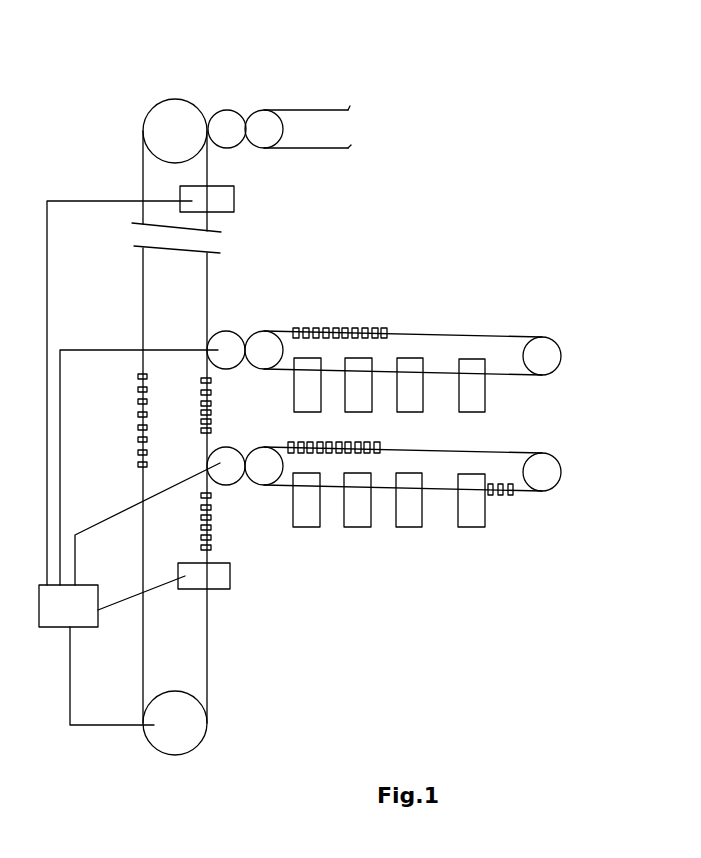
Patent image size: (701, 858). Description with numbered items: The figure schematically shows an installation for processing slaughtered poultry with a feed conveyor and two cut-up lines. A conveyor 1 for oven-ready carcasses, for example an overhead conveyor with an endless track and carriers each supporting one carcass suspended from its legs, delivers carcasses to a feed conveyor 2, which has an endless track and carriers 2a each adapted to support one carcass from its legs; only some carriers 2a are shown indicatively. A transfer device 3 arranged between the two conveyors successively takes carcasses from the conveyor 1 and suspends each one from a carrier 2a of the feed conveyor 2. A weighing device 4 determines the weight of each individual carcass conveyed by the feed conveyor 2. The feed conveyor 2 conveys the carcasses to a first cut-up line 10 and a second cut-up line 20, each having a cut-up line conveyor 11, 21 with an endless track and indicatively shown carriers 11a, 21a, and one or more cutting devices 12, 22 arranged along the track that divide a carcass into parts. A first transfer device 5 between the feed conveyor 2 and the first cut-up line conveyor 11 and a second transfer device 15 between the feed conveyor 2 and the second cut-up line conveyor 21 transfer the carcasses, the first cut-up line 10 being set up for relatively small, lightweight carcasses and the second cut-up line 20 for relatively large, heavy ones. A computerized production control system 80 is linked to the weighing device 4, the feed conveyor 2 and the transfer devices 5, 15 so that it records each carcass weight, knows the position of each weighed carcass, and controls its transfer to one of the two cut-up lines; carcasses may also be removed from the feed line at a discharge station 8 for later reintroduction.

The conveyor 1 is at (325, 92).
The feed conveyor 2 is at (128, 150).
The carriers 2a is at (137, 428).
The transfer device 3 is at (225, 97).
The weighing device 4 is at (243, 196).
The first transfer device 5 is at (228, 327).
The discharge station 8 is at (233, 580).
The first cut-up line 10 is at (510, 312).
The first cut-up line conveyor 11 is at (428, 331).
The carriers 11a is at (318, 324).
The cutting devices 12 is at (310, 417).
The second transfer device 15 is at (222, 446).
The second cut-up line 20 is at (578, 537).
The second cut-up line conveyor 21 is at (505, 449).
The carriers 21a is at (492, 498).
The cutting devices 22 is at (470, 533).
The computerized production control system 80 is at (39, 610).